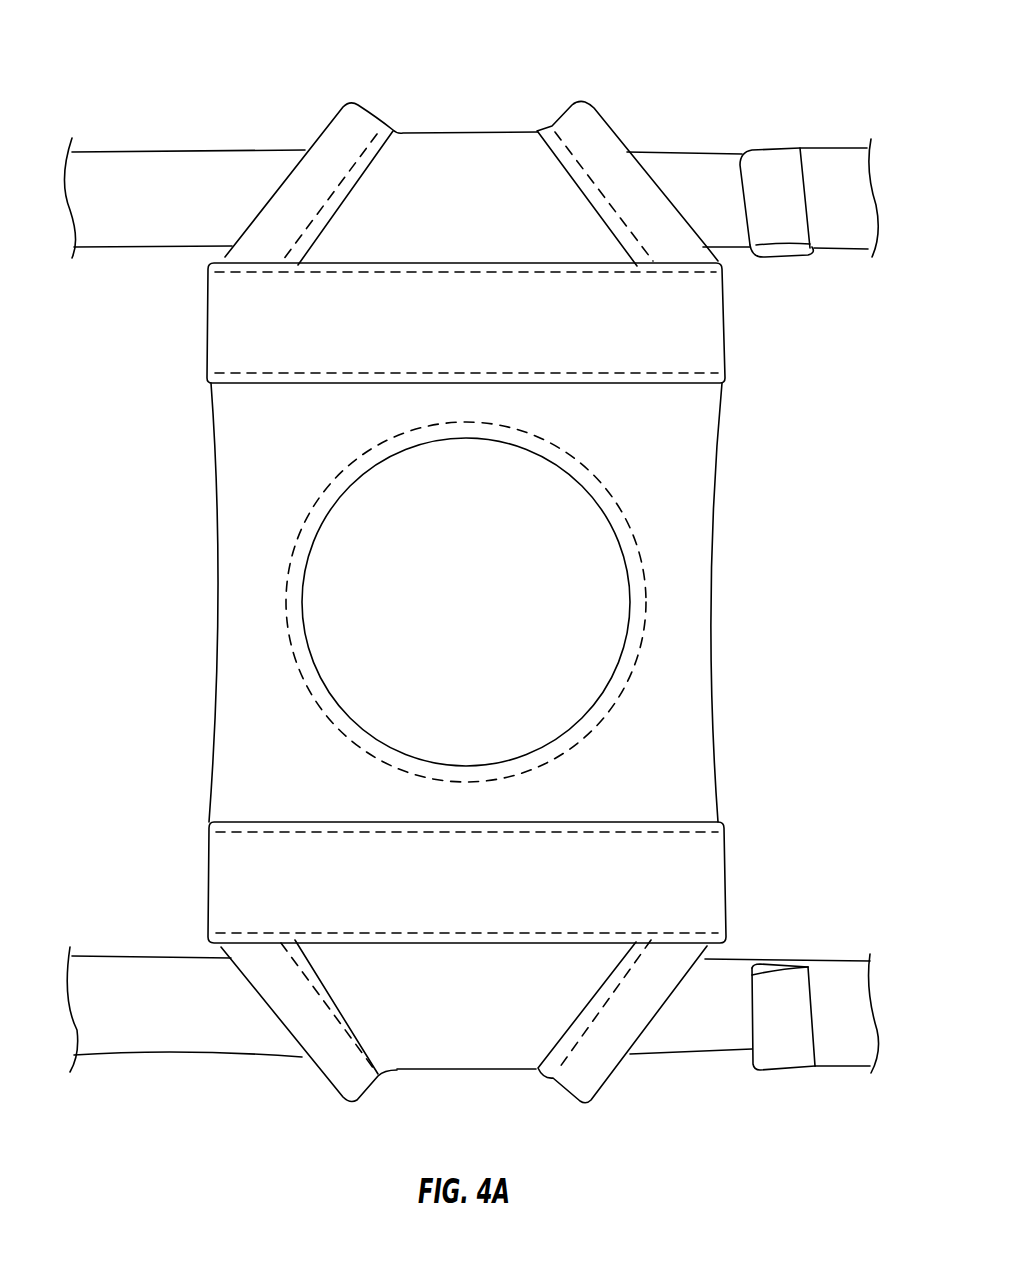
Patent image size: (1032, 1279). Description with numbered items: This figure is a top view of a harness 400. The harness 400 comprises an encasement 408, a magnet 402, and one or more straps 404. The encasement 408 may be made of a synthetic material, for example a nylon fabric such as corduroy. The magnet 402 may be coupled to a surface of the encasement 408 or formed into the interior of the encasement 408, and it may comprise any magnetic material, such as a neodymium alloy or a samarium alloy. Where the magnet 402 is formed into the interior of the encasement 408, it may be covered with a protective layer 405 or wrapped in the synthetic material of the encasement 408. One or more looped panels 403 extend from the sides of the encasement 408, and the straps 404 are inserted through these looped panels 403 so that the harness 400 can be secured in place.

The harness 400 is at (235, 60).
The magnet 402 is at (305, 631).
The looped panel 403 is at (547, 190).
The strap 404 is at (842, 217).
The protective layer 405 is at (620, 585).
The encasement 408 is at (215, 537).